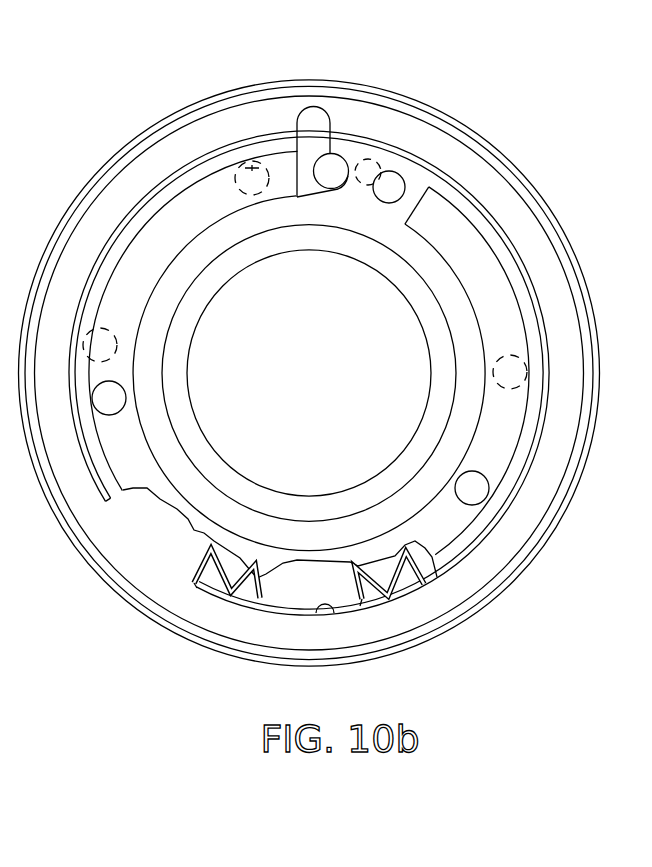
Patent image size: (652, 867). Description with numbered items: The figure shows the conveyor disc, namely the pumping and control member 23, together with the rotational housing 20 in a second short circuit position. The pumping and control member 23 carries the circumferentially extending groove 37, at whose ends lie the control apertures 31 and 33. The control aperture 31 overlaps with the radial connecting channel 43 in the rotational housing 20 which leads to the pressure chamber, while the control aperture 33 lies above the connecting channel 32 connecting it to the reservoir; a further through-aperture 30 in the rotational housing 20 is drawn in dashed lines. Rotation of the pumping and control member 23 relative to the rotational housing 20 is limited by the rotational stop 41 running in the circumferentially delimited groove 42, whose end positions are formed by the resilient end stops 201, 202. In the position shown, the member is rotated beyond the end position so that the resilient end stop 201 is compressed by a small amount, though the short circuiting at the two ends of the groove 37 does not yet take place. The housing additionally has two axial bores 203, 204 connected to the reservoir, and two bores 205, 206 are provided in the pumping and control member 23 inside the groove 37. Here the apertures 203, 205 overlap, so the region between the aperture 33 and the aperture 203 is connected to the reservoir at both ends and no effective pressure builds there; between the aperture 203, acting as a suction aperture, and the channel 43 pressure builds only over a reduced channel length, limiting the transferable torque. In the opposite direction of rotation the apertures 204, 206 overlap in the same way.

The rotational housing 20 is at (128, 160).
The pumping and control member 23 is at (163, 180).
The through-aperture 30 is at (249, 162).
The control aperture 31 is at (338, 155).
The connecting channel 32 is at (375, 152).
The control aperture 33 is at (400, 173).
The circumferentially extending groove 37 is at (480, 263).
The rotational stop 41 is at (248, 598).
The circumferentially delimited groove 42 is at (320, 606).
The radial connecting channel 43 is at (312, 118).
The resilient end stop 201 is at (215, 593).
The resilient end stop 202 is at (347, 613).
The axial bore 203 is at (92, 330).
The axial bore 204 is at (524, 360).
The bore 205 is at (110, 423).
The bore 206 is at (489, 488).